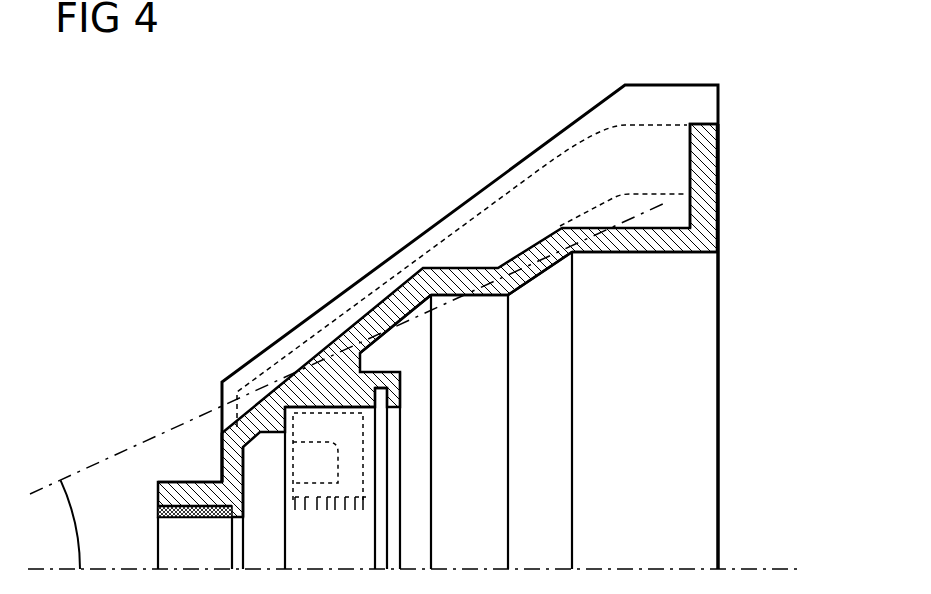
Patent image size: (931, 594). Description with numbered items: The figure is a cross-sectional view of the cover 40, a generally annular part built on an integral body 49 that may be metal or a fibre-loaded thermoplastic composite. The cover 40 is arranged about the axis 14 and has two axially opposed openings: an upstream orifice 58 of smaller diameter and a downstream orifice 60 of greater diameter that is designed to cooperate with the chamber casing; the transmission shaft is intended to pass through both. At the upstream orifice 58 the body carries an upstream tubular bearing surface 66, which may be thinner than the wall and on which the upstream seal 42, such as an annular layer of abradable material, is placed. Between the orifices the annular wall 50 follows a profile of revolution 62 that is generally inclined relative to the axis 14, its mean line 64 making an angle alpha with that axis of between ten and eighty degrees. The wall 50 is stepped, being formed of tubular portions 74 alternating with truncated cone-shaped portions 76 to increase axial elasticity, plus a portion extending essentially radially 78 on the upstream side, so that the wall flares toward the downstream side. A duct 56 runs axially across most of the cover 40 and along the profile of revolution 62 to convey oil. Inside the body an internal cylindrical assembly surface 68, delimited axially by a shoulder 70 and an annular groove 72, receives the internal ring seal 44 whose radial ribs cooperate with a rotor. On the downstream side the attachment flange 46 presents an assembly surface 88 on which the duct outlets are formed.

The axis 14 is at (635, 572).
The cover 40 is at (219, 183).
The upstream seal 42 is at (205, 521).
The internal ring seal 44 is at (308, 492).
The attachment flange 46 is at (702, 124).
The integral body 49 is at (417, 184).
The annular wall 50 is at (400, 302).
The duct 56 is at (535, 215).
The upstream orifice 58 is at (157, 552).
The downstream orifice 60 is at (718, 522).
The profile of revolution 62 is at (619, 371).
The mean line 64 is at (90, 468).
The upstream tubular bearing surface 66 is at (180, 493).
The internal cylindrical assembly surface 68 is at (368, 413).
The shoulder 70 is at (297, 430).
The annular groove 72 is at (380, 551).
The tubular portions 74 is at (475, 300).
The truncated cone-shaped portions 76 is at (362, 335).
The radially extending portion 78 is at (220, 460).
The assembly surface 88 is at (718, 197).